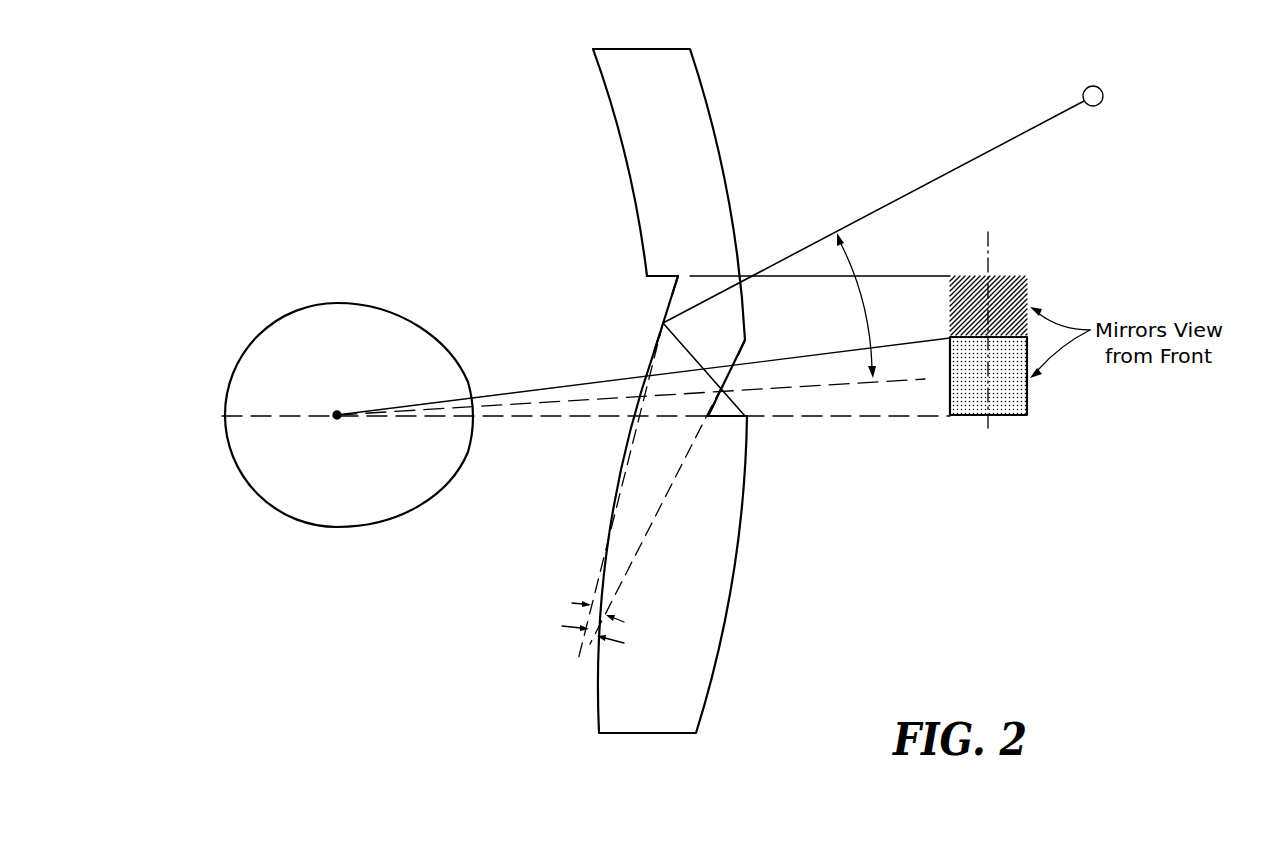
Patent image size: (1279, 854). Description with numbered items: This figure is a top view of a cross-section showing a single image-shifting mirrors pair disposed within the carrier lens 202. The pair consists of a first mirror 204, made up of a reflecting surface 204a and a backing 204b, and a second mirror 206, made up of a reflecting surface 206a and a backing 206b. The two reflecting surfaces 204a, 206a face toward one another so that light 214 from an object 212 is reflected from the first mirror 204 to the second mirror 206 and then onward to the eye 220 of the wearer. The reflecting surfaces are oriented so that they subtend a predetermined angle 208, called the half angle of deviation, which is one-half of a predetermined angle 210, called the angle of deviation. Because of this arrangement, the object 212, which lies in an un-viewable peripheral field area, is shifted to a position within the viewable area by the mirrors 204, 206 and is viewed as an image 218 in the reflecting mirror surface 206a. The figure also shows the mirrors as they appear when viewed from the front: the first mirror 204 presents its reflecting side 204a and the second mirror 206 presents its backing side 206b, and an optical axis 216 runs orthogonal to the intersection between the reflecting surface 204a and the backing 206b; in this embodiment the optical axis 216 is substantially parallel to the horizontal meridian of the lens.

The carrier lens 202 is at (515, 83).
The first mirror 204 is at (622, 302).
The reflecting surface 204a is at (678, 298).
The backing 204b is at (655, 333).
The second mirror 206 is at (748, 381).
The reflecting surface 206a is at (738, 350).
The backing 206b is at (750, 418).
The half angle of deviation 208 is at (600, 612).
The angle of deviation 210 is at (856, 293).
The object 212 is at (1083, 92).
The light 214 is at (984, 152).
The optical axis 216 is at (991, 240).
The image 218 is at (929, 393).
The eye 220 is at (351, 361).